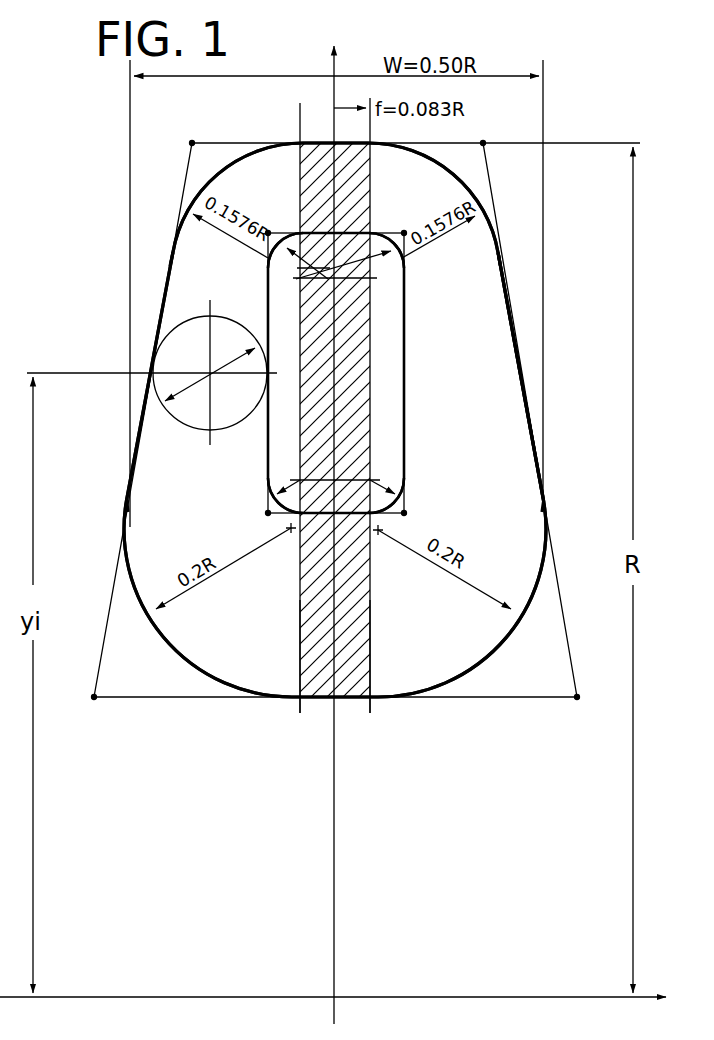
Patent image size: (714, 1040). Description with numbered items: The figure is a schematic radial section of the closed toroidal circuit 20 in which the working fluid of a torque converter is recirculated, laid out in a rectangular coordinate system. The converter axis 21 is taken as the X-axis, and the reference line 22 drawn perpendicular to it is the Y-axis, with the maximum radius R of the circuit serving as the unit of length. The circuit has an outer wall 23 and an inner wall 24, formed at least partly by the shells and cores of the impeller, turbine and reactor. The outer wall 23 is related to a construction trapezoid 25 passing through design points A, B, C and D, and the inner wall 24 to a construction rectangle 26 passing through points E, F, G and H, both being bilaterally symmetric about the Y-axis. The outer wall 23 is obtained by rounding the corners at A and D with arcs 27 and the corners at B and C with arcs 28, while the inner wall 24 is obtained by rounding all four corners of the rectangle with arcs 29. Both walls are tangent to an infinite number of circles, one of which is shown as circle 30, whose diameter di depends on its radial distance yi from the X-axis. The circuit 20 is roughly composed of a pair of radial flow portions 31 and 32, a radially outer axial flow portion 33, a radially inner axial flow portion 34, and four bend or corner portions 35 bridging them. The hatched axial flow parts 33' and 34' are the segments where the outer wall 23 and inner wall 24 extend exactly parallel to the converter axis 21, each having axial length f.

The toroidal circuit 20 is at (495, 293).
The converter axis 21 is at (109, 995).
The reference line 22 is at (334, 818).
The outer wall 23 is at (510, 322).
The inner wall 24 is at (404, 342).
The construction trapezoid 25 is at (170, 703).
The construction rectangle 26 is at (268, 513).
The arcs 27 is at (238, 160).
The arcs 28 is at (182, 657).
The arcs 29 is at (283, 258).
The circle 30 is at (186, 319).
The radial flow portion 31 is at (497, 356).
The radial flow portion 32 is at (161, 458).
The radially outer axial flow portion 33 is at (307, 138).
The axial flow part 33' is at (331, 395).
The radially inner axial flow portion 34 is at (311, 719).
The axial flow part 34' is at (346, 675).
The bend or corner portions 35 is at (217, 188).